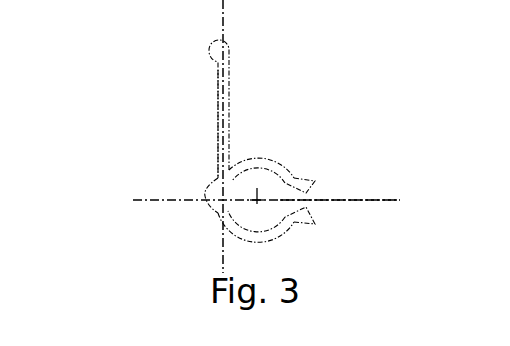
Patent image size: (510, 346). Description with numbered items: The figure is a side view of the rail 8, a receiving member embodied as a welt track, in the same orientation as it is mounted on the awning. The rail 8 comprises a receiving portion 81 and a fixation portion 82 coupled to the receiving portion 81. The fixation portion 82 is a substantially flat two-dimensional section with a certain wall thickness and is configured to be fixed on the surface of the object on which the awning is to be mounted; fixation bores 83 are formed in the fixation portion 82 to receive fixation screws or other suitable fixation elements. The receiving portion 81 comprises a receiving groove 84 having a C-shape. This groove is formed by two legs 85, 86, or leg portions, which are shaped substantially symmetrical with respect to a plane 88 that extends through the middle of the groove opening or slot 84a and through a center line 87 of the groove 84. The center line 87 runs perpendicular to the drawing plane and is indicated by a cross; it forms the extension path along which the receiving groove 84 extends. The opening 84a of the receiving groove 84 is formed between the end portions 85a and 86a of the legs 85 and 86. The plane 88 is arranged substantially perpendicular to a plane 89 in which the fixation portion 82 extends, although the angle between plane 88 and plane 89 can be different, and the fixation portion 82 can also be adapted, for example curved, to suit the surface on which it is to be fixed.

The rail 8 is at (225, 163).
The receiving portion 81 is at (220, 226).
The fixation portion 82 is at (252, 92).
The fixation bores 83 is at (215, 98).
The receiving groove 84 is at (255, 197).
The opening 84a is at (297, 197).
The leg 85 is at (255, 235).
The end portion 85a is at (290, 218).
The leg 86 is at (265, 160).
The end portion 86a is at (290, 178).
The center line 87 is at (257, 200).
The plane 88 is at (133, 200).
The plane 89 is at (225, 15).